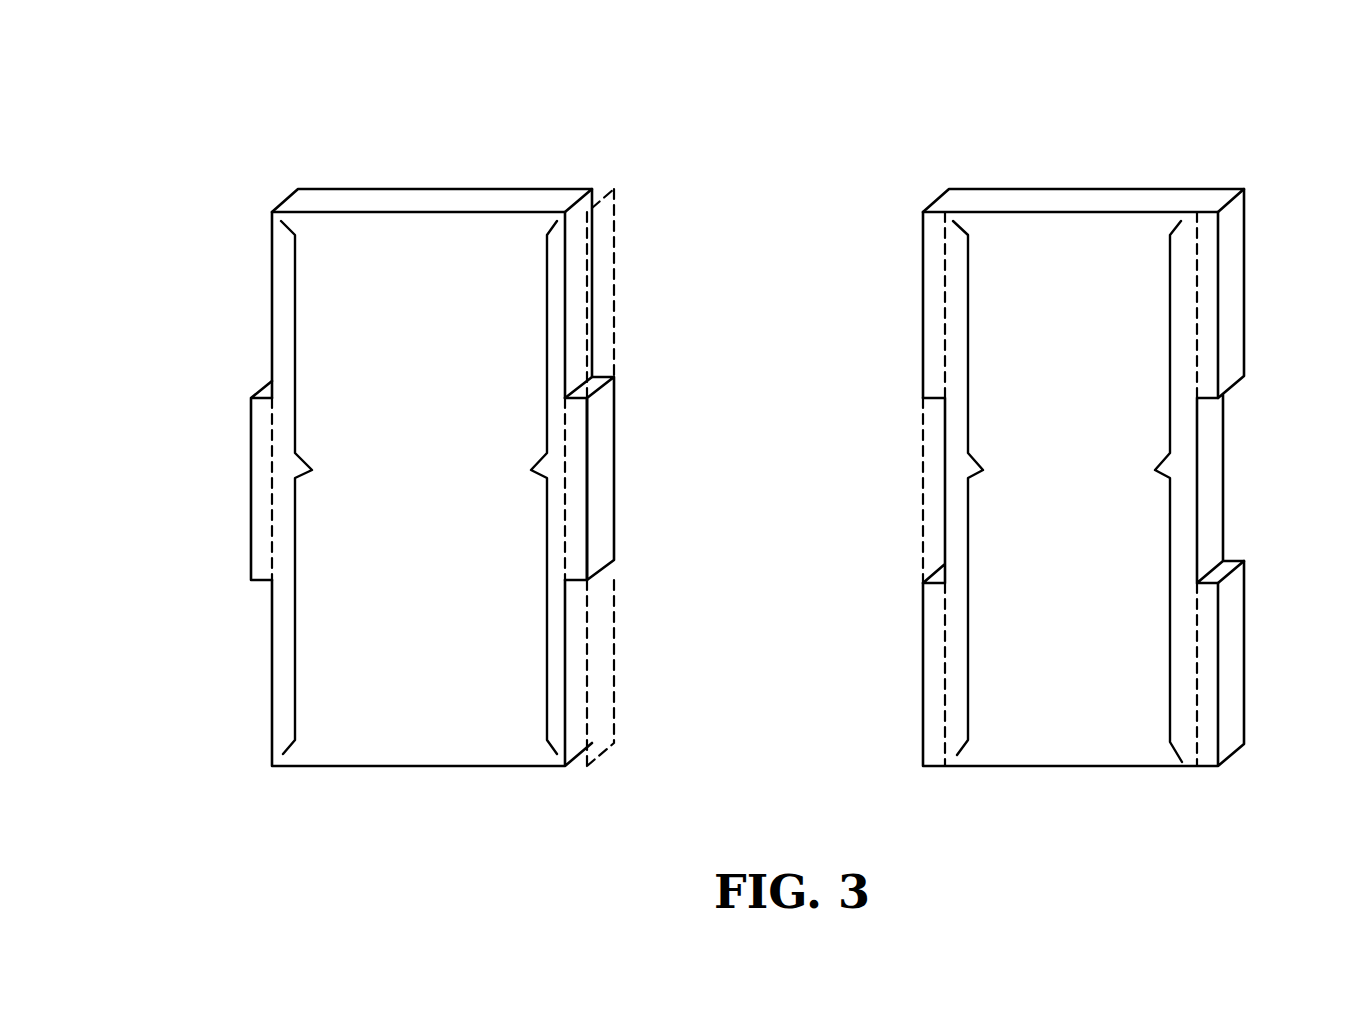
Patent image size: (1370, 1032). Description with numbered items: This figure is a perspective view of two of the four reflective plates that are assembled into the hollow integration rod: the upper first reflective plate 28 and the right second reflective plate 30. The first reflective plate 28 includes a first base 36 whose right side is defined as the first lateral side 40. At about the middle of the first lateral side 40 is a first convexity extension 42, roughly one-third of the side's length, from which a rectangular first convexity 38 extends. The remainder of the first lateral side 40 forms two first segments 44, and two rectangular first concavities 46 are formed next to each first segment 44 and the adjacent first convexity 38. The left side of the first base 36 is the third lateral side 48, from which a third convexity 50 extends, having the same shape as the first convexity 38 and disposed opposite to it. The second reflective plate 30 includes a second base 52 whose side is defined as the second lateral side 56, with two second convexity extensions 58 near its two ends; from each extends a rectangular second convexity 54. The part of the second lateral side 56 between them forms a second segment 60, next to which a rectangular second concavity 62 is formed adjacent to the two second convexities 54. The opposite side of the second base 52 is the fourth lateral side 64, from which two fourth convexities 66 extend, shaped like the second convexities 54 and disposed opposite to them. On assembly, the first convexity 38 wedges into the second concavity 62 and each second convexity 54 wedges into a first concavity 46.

The first reflective plate 28 is at (235, 153).
The second reflective plate 30 is at (1162, 122).
The first base 36 is at (322, 238).
The first convexity 38 is at (577, 463).
The first lateral side 40 is at (519, 487).
The first convexity extension 42 is at (565, 520).
The first segment 44 is at (568, 265).
The first concavity 46 is at (605, 295).
The third lateral side 48 is at (323, 487).
The third convexity 50 is at (260, 487).
The second base 52 is at (1042, 237).
The second convexity 54 is at (935, 353).
The second lateral side 56 is at (993, 488).
The second convexity extension 58 is at (942, 250).
The second segment 60 is at (945, 465).
The second concavity 62 is at (932, 532).
The fourth lateral side 64 is at (1142, 491).
The fourth convexity 66 is at (1208, 292).